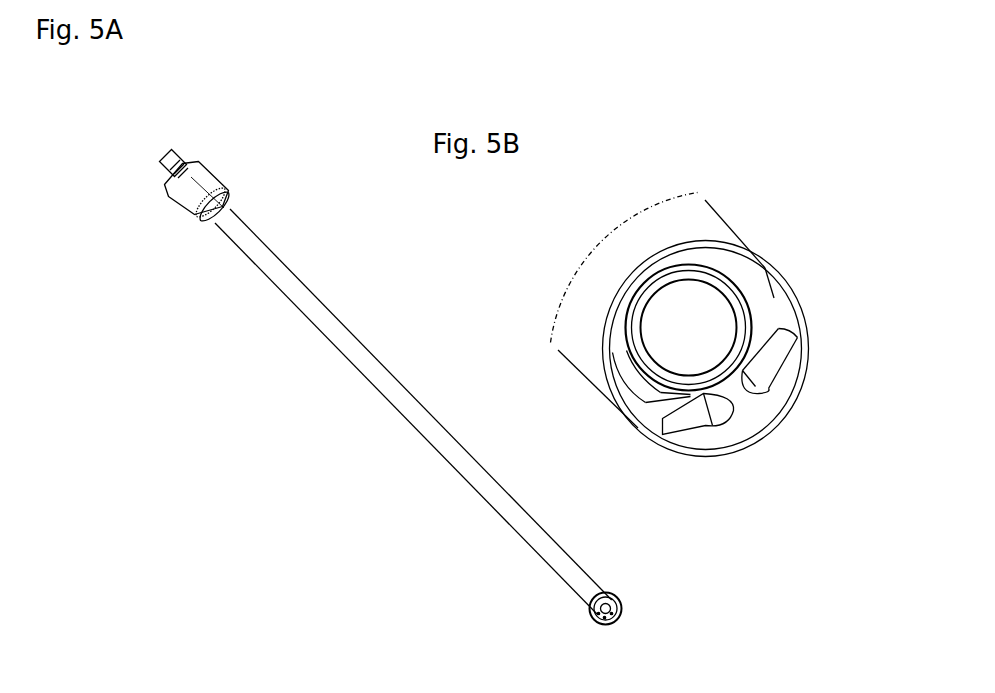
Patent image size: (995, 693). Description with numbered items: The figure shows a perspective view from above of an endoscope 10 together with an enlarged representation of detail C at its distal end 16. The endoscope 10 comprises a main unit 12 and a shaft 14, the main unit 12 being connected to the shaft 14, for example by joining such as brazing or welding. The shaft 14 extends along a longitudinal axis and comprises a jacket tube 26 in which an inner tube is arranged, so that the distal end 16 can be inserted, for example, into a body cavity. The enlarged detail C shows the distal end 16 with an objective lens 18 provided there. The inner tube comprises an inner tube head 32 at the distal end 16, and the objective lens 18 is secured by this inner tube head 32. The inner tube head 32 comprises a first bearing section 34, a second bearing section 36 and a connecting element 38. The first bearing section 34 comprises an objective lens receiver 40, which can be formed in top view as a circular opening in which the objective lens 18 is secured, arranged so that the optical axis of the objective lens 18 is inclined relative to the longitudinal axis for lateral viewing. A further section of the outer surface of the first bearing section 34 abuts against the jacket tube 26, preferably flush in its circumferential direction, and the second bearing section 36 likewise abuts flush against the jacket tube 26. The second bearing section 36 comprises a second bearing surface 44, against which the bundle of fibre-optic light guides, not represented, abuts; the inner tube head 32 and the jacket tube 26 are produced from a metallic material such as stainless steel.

In FIG. 5A, the endoscope 10 is at (429, 366).
In FIG. 5A, the main unit 12 is at (202, 172).
In FIG. 5A, the shaft 14 is at (248, 244).
In FIG. 5A, the distal end 16 is at (612, 602).
In FIG. 5A, the detail C is at (600, 584).
In FIG. 5B, the objective lens 18 is at (670, 312).
In FIG. 5B, the jacket tube 26 is at (652, 218).
In FIG. 5B, the inner tube head 32 is at (614, 346).
In FIG. 5B, the first bearing section 34 is at (710, 250).
In FIG. 5B, the second bearing section 36 is at (726, 430).
In FIG. 5B, the connecting element 38 is at (730, 390).
In FIG. 5B, the objective lens receiver 40 is at (680, 376).
In FIG. 5B, the second bearing surface 44 is at (762, 360).